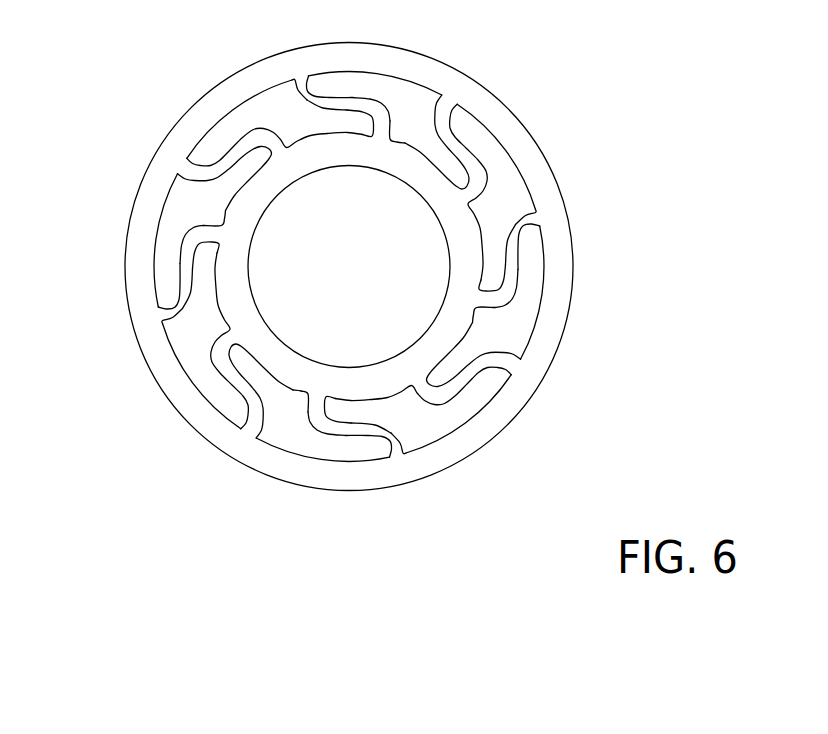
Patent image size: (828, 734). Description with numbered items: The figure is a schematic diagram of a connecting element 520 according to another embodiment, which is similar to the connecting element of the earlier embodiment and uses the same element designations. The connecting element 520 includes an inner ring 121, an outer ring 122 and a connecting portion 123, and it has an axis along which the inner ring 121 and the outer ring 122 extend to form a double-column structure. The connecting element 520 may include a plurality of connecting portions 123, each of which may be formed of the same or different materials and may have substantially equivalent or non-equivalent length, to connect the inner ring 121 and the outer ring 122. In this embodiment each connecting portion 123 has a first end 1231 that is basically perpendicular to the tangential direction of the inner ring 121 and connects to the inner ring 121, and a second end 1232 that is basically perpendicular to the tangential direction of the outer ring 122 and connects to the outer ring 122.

The connecting element 520 is at (123, 41).
The inner ring 121 is at (460, 227).
The outer ring 122 is at (548, 198).
The connecting portion 123 is at (340, 103).
The first end 1231 is at (488, 300).
The second end 1232 is at (530, 221).